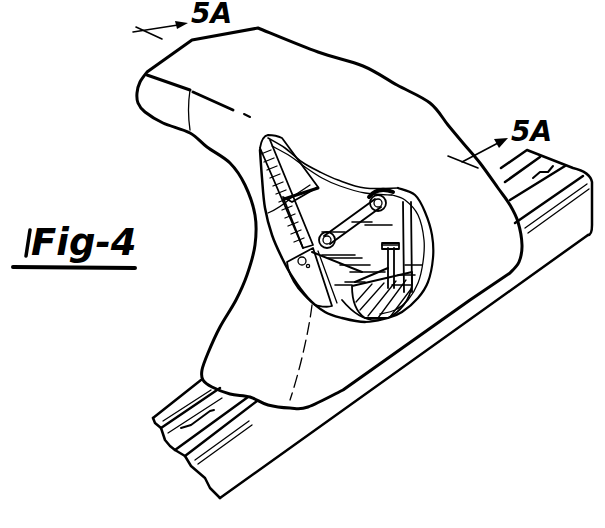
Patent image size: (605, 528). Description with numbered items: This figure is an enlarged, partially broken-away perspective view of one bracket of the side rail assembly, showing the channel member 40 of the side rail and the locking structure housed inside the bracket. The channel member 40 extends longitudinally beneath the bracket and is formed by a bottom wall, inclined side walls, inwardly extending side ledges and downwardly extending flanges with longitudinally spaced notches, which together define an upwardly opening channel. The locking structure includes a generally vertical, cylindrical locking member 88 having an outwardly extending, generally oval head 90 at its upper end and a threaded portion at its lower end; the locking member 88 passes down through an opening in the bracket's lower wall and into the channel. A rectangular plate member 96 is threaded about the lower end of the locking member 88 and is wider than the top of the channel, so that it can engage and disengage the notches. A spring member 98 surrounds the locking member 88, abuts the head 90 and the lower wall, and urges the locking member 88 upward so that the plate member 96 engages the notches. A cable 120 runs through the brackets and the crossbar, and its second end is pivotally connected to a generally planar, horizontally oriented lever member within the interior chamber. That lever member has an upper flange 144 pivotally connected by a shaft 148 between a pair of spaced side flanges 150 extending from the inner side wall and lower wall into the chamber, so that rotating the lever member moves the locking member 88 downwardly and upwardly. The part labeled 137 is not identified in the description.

The channel member 40 is at (273, 468).
The locking member 88 is at (413, 286).
The head 90 is at (412, 238).
The plate member 96 is at (363, 320).
The spring member 98 is at (414, 268).
The cable 120 is at (262, 216).
The strut arm 137 is at (278, 138).
The upper flange 144 is at (325, 232).
The shaft 148 is at (358, 198).
The side flanges 150 is at (286, 270).